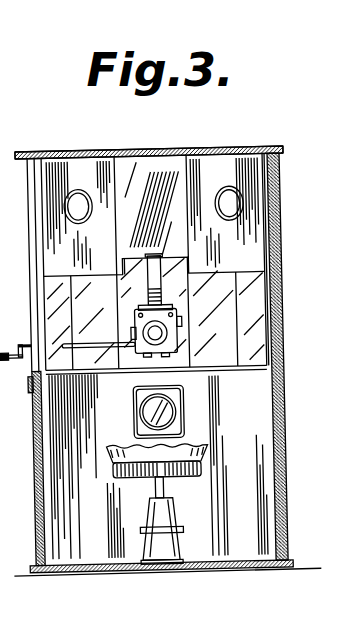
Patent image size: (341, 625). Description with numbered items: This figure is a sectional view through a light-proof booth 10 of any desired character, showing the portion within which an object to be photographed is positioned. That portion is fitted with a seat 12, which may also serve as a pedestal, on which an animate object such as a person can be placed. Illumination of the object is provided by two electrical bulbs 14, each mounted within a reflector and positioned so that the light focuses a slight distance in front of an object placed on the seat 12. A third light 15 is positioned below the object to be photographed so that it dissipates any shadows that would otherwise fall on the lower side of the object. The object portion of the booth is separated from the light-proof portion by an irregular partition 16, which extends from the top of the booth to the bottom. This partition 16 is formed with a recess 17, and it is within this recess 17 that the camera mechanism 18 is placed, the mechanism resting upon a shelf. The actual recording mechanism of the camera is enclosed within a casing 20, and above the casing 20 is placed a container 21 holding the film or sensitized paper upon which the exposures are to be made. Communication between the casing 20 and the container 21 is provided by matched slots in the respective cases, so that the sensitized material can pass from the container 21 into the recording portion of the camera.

The light-proof booth 10 is at (279, 216).
The seat 12 is at (193, 472).
The electrical bulbs 14 is at (74, 196).
The third light 15 is at (128, 415).
The irregular partition 16 is at (257, 397).
The recess 17 is at (215, 308).
The camera mechanism 18 is at (174, 336).
The casing 20 is at (169, 356).
The container 21 is at (154, 279).